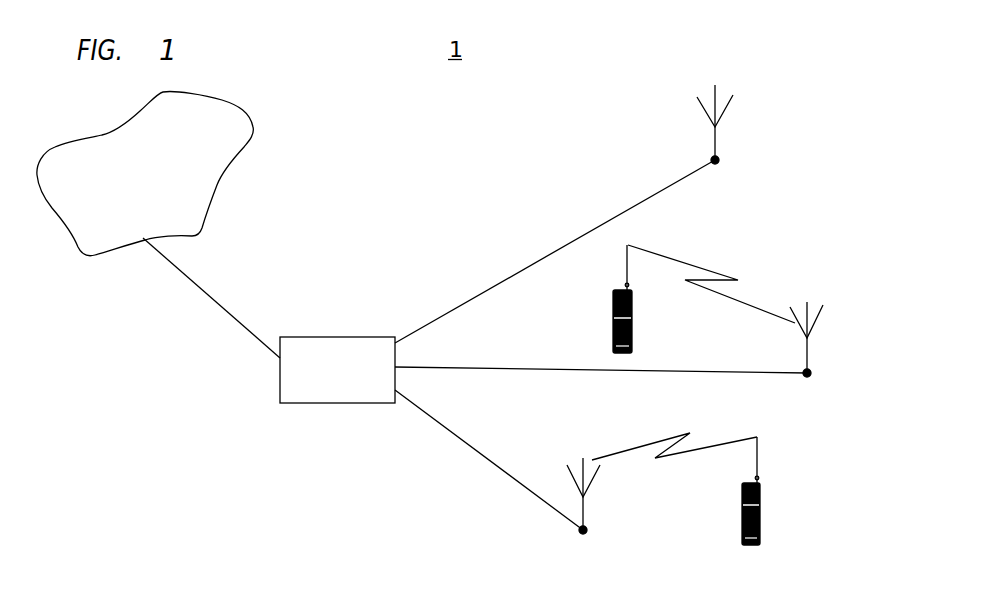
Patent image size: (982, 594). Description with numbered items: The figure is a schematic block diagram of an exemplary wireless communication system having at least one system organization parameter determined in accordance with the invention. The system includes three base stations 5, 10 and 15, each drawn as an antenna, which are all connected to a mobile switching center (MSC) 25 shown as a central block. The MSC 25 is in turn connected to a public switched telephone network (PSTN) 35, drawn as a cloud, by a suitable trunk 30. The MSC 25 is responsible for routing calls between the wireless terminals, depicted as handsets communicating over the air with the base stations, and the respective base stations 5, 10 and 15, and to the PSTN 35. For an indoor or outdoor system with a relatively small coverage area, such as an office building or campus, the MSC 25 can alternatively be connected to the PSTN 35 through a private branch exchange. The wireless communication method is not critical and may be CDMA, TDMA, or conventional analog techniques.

The base station 5 is at (718, 121).
The base station 10 is at (817, 328).
The base station 15 is at (593, 483).
The mobile switching center 25 is at (357, 337).
The trunk 30 is at (203, 290).
The public switched telephone network 35 is at (252, 120).